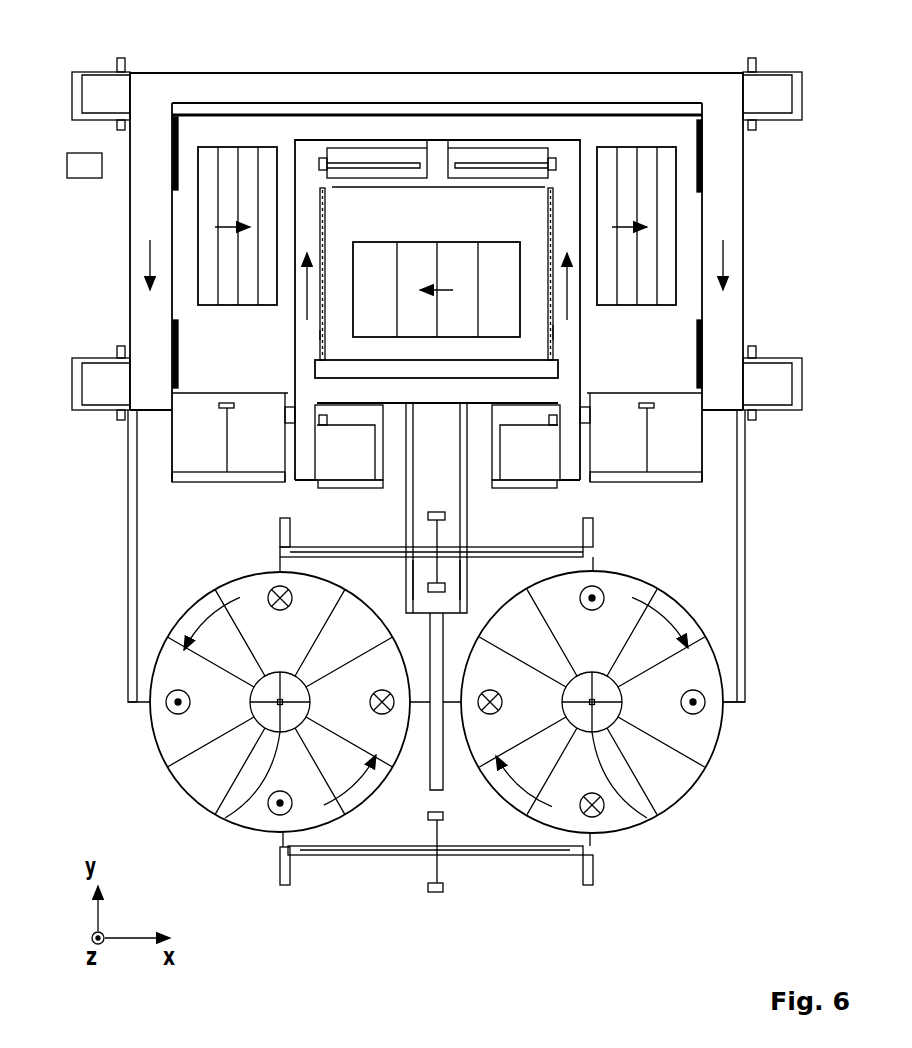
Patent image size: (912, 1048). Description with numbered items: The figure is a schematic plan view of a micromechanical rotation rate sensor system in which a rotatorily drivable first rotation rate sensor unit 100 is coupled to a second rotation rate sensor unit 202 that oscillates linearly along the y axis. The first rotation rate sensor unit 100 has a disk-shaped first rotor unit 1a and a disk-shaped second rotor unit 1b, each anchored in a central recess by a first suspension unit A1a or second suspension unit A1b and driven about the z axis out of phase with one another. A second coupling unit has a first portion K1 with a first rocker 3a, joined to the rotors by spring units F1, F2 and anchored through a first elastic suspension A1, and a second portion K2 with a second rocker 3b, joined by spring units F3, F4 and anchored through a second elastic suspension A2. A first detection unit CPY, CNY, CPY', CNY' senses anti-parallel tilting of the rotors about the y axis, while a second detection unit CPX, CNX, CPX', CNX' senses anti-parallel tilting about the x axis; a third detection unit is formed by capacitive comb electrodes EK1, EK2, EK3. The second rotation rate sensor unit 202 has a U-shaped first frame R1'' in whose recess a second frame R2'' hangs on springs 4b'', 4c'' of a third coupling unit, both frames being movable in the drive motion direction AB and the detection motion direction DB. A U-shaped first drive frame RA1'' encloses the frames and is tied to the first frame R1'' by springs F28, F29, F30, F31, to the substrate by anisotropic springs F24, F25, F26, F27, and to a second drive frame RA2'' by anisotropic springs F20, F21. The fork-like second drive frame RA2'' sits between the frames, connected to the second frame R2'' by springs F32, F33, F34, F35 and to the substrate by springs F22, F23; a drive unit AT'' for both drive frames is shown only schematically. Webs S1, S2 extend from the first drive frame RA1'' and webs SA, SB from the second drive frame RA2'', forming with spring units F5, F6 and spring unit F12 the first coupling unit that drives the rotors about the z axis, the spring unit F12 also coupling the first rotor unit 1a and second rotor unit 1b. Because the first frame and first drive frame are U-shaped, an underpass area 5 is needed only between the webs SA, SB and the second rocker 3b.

The first rotation rate sensor unit 100 is at (768, 651).
The second rotation rate sensor unit 202 is at (772, 146).
The first rotor unit 1a is at (192, 800).
The second rotor unit 1b is at (682, 800).
The first suspension unit A1a is at (222, 818).
The second suspension unit A1b is at (653, 817).
The first rocker 3a is at (465, 857).
The second rocker 3b is at (533, 547).
The underpass area 5 is at (405, 540).
The first elastic suspension A1 is at (432, 872).
The second elastic suspension A2 is at (445, 530).
The first portion of second coupling unit K1 is at (507, 912).
The second portion of second coupling unit K2 is at (612, 555).
The spring unit F1 is at (283, 887).
The spring unit F2 is at (588, 887).
The spring unit F3 is at (280, 544).
The spring unit F4 is at (593, 523).
The spring unit of first coupling unit F5 is at (132, 708).
The spring unit of first coupling unit F6 is at (740, 708).
The spring unit F12 is at (447, 770).
The anisotropic spring F20 is at (187, 482).
The anisotropic spring F21 is at (687, 482).
The spring F22 is at (378, 457).
The spring F23 is at (495, 458).
The anisotropic spring F24 is at (797, 388).
The anisotropic spring F25 is at (793, 83).
The anisotropic spring F26 is at (76, 83).
The anisotropic spring F27 is at (77, 388).
The spring F28 is at (176, 157).
The spring F29 is at (700, 158).
The spring F30 is at (173, 348).
The spring F31 is at (702, 348).
The spring F32 is at (320, 227).
The spring F33 is at (553, 223).
The spring F34 is at (320, 335).
The spring F35 is at (552, 332).
The web S1 is at (128, 552).
The web S2 is at (745, 575).
The web SA is at (407, 597).
The web SB is at (467, 593).
The first multitude of capacitive comb electrodes EK1 is at (245, 170).
The second multitude of capacitive comb electrodes EK2 is at (652, 170).
The third multitude of capacitive comb electrodes EK3 is at (428, 260).
The first frame R1'' is at (384, 98).
The second frame R2'' is at (507, 112).
The spring of third coupling unit 4b'' is at (502, 94).
The pole piece 4c'' is at (373, 94).
The first drive frame RA1'' is at (565, 310).
The second drive frame RA2'' is at (571, 333).
The direction of drive motion AB is at (148, 257).
The direction of detection motion DB is at (233, 227).
The drive unit AT'' is at (56, 151).
The second detection unit electrode CNX is at (360, 703).
The first detection unit electrode CNY is at (280, 612).
The second detection unit electrode CPX is at (200, 703).
The first detection unit electrode CPY is at (280, 789).
The second detection unit electrode CNX' is at (515, 703).
The first detection unit electrode CNY' is at (591, 791).
The second detection unit electrode CPX' is at (670, 703).
The first detection unit electrode CPY' is at (592, 612).